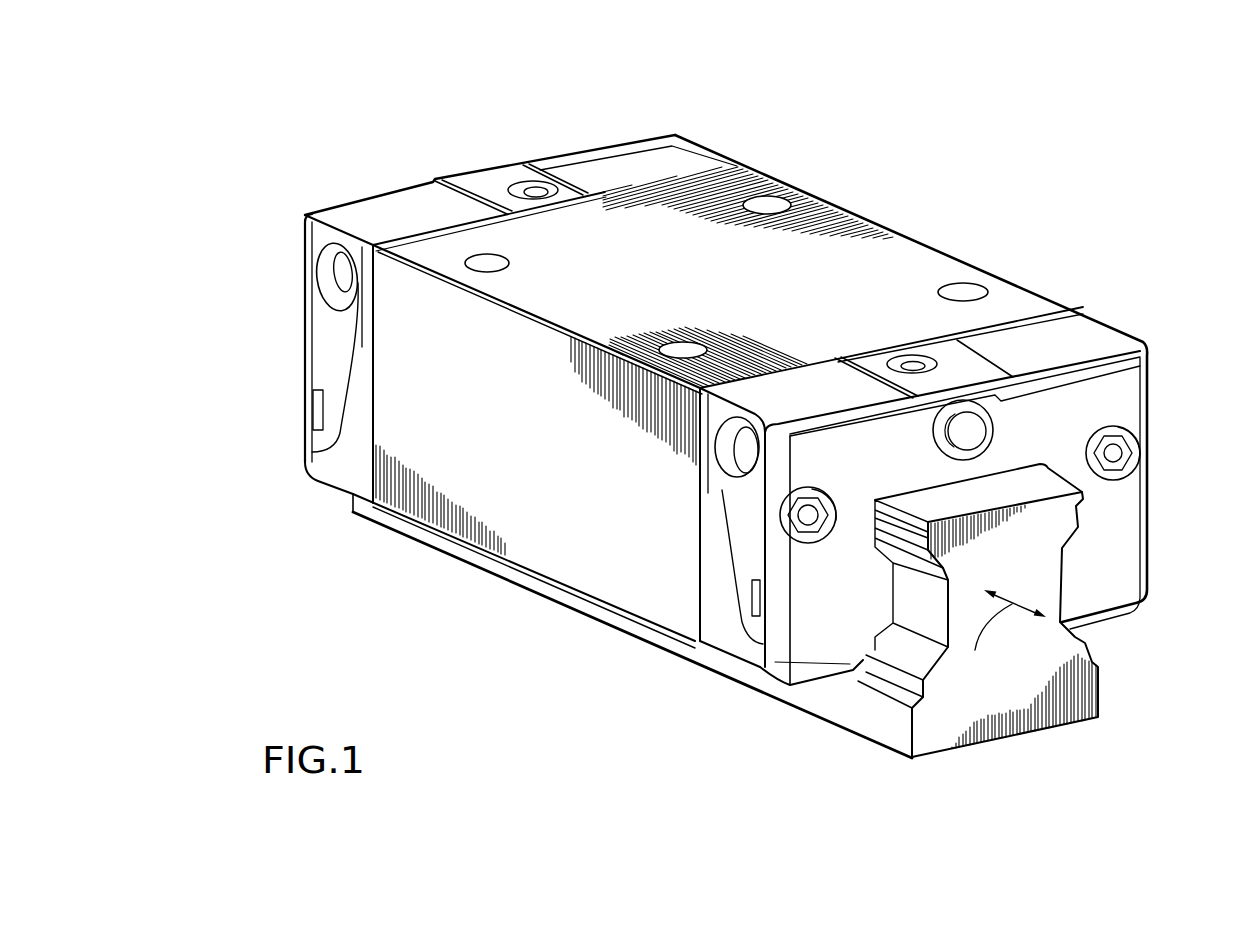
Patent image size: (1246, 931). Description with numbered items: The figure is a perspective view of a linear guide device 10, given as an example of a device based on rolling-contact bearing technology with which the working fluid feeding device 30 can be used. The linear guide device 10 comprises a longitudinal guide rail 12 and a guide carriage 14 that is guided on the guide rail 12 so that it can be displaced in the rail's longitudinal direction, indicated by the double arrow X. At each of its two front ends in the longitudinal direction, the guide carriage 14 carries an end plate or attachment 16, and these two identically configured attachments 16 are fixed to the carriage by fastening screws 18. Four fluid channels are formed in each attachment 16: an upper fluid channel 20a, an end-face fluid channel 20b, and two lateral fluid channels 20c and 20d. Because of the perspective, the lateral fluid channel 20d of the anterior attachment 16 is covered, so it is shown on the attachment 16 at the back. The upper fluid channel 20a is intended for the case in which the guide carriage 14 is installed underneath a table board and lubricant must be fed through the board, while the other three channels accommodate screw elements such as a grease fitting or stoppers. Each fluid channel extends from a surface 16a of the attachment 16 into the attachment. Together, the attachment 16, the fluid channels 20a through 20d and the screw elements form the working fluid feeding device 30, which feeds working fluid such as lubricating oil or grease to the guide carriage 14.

The linear guide device 10 is at (1122, 181).
The guide rail 12 is at (998, 718).
The guide carriage 14 is at (840, 218).
The attachment 16 is at (380, 217).
The surface of attachment 16a is at (828, 622).
The fastening screws 18 is at (1127, 441).
The upper fluid channel 20a is at (520, 188).
The end-face fluid channel 20b is at (985, 442).
The lateral fluid channel 20c is at (746, 456).
The lateral fluid channel 20d is at (328, 283).
The working fluid feeding device 30 is at (546, 674).